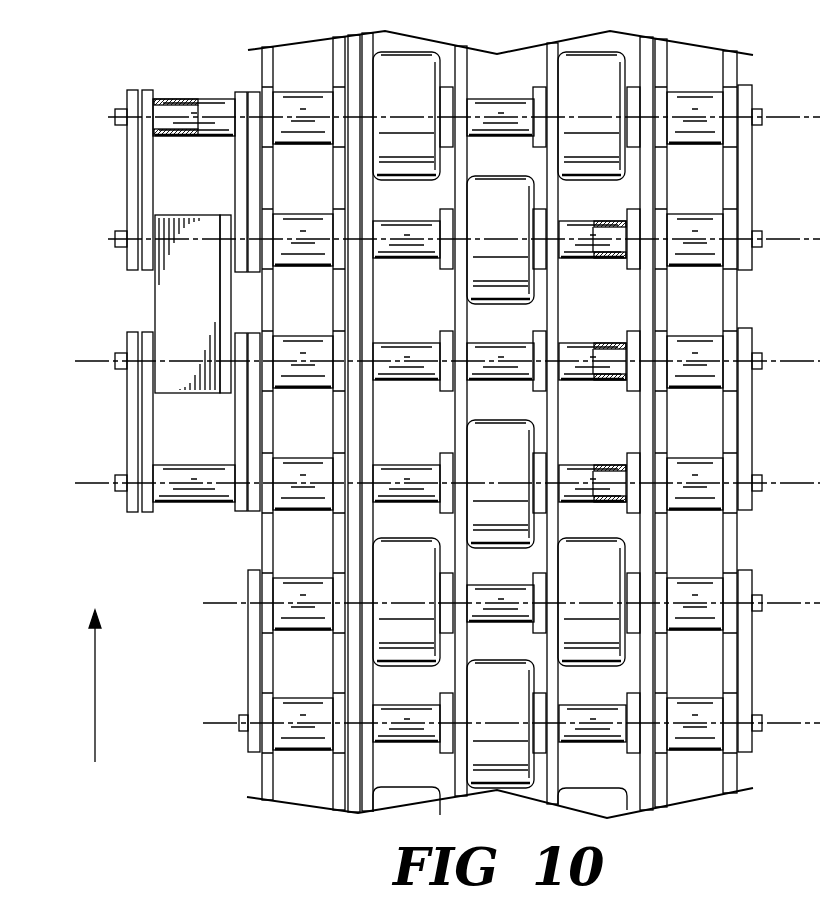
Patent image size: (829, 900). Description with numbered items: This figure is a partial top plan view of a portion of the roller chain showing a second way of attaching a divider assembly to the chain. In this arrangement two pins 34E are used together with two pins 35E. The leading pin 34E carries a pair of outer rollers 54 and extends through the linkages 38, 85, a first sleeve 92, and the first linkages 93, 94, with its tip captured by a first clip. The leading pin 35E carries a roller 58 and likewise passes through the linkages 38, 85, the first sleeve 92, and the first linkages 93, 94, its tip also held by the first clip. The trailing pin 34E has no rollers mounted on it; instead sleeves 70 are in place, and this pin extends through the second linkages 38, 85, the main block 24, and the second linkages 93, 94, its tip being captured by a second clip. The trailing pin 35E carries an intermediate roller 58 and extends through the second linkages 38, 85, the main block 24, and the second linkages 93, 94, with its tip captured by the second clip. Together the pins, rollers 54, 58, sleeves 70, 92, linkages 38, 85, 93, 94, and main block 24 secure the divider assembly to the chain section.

The main block 24 is at (216, 321).
The pin 34E is at (173, 130).
The pin 35E is at (613, 226).
The linkage 38 is at (257, 92).
The outer roller 54 is at (419, 100).
The roller 58 is at (509, 226).
The sleeve 70 is at (571, 258).
The linkage 85 is at (240, 92).
The first sleeve 92 is at (217, 137).
The first linkage 93 is at (147, 90).
The first linkage 94 is at (128, 137).